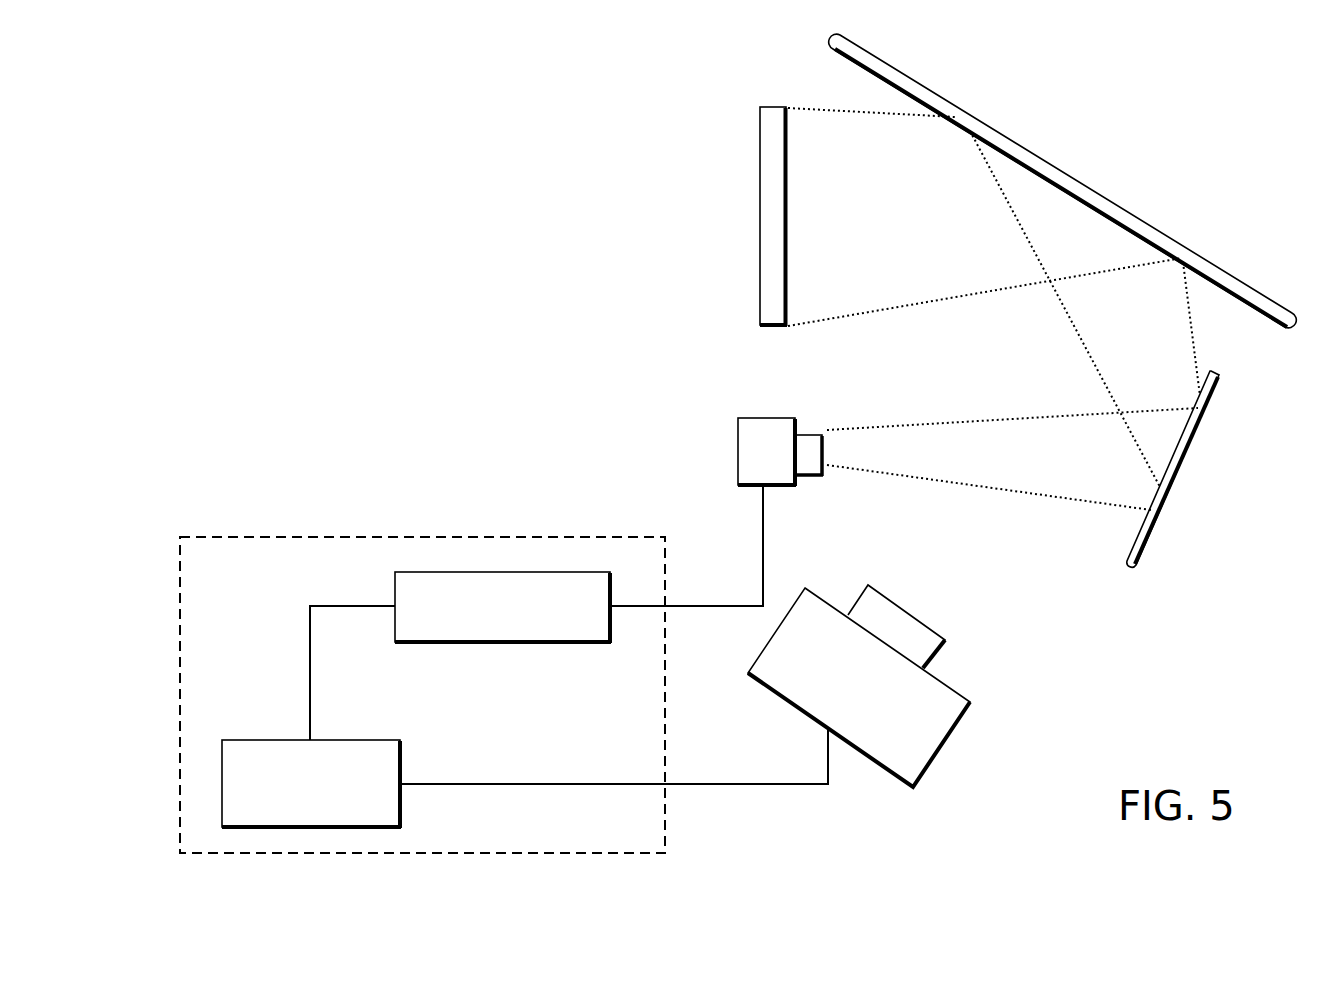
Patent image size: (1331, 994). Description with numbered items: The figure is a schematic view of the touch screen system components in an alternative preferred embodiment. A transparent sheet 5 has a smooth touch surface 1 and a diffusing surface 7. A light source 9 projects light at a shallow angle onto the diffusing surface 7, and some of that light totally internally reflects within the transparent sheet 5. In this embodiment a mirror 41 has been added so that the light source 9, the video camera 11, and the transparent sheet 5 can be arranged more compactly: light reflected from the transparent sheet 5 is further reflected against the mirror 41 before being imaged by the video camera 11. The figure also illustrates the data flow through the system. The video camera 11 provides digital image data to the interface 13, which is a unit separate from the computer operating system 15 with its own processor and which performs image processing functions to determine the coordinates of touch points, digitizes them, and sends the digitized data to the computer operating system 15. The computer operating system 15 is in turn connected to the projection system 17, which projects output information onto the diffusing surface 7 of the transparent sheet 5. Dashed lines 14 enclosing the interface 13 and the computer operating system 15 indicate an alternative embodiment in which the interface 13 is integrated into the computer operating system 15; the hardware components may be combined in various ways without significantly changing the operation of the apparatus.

The touch surface 1 is at (972, 117).
The transparent sheet 5 is at (836, 38).
The diffusing surface 7 is at (1288, 323).
The light source 9 is at (760, 220).
The video camera 11 is at (738, 456).
The interface 13 is at (490, 643).
The dashed lines 14 is at (285, 537).
The computer operating system 15 is at (262, 740).
The projection system 17 is at (948, 740).
The mirror 41 is at (1152, 530).